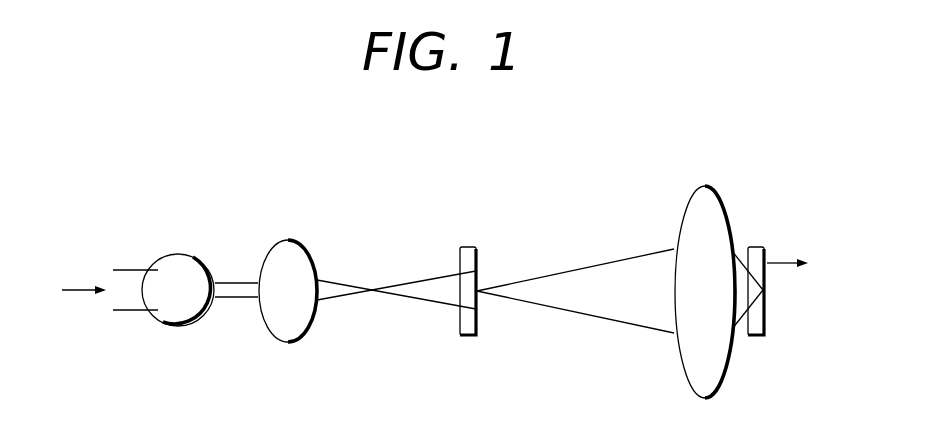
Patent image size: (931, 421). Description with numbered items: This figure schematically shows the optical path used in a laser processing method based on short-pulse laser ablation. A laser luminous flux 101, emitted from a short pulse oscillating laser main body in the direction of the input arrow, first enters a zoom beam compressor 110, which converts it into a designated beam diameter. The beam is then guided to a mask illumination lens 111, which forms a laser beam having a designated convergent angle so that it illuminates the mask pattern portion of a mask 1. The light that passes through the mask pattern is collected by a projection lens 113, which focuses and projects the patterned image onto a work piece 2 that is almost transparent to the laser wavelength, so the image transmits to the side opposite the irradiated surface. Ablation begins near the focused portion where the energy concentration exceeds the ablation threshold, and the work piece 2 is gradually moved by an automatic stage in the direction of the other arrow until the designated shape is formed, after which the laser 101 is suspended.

The mask 1 is at (465, 248).
The work piece 2 is at (758, 323).
The laser luminous flux 101 is at (128, 300).
The zoom beam compressor 110 is at (180, 260).
The mask illumination lens 111 is at (283, 247).
The projection lens 113 is at (705, 192).